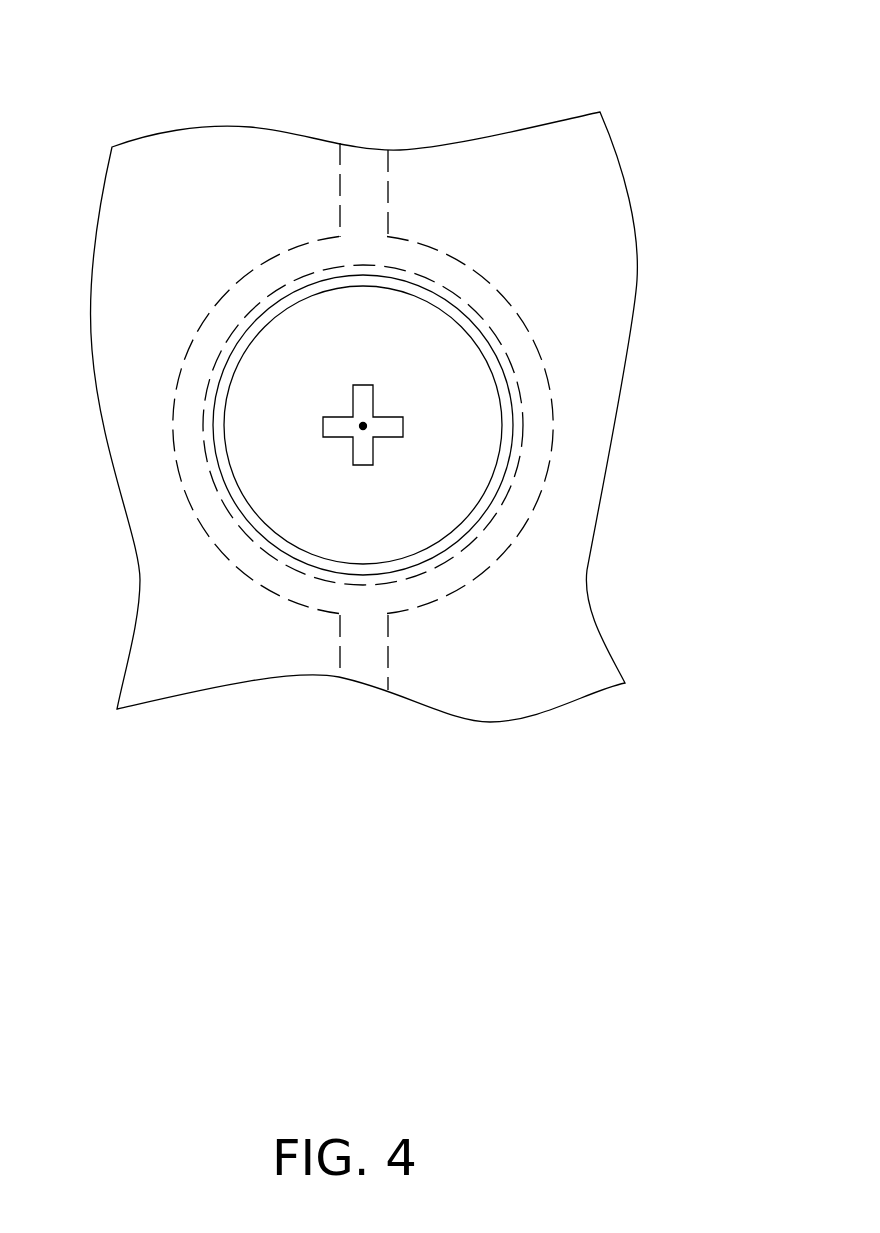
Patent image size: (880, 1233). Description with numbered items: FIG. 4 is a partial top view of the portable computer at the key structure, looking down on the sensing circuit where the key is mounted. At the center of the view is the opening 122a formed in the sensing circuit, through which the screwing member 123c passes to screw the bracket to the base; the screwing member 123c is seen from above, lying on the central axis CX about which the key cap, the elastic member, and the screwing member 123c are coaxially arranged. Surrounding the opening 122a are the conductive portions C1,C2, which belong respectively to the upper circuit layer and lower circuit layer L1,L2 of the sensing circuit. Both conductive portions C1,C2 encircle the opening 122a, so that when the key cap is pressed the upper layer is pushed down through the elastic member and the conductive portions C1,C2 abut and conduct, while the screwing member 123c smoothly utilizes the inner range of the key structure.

The opening 122a is at (222, 405).
The conductive portions C1,C2 is at (440, 265).
The screwing member 123c is at (463, 373).
The central axis CX is at (366, 429).
The upper circuit layer and lower circuit layer L1,L2 is at (472, 693).